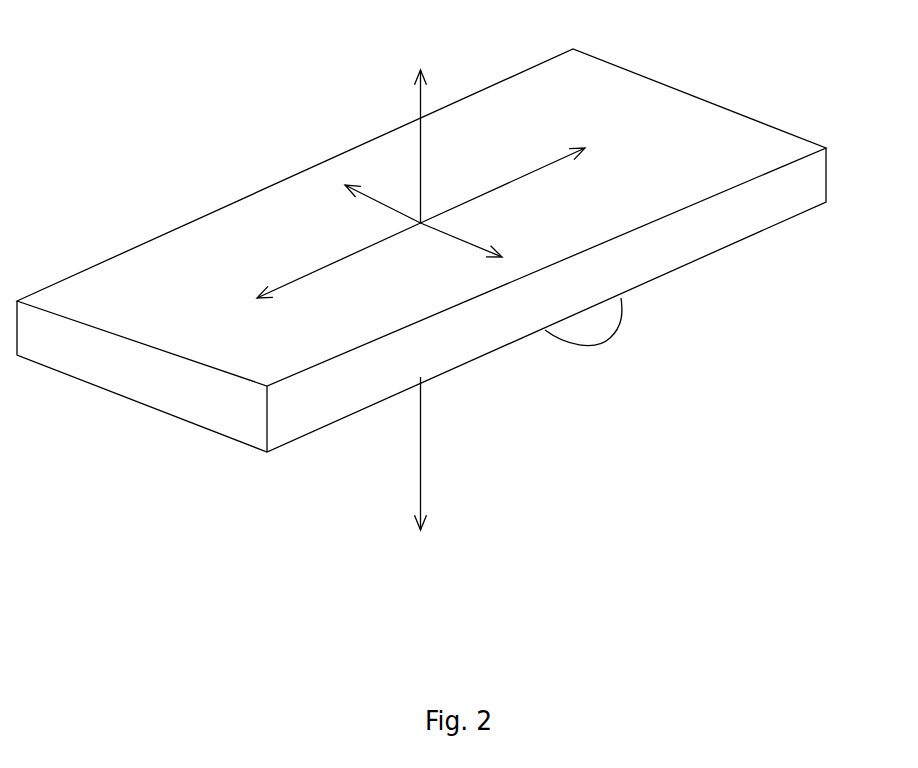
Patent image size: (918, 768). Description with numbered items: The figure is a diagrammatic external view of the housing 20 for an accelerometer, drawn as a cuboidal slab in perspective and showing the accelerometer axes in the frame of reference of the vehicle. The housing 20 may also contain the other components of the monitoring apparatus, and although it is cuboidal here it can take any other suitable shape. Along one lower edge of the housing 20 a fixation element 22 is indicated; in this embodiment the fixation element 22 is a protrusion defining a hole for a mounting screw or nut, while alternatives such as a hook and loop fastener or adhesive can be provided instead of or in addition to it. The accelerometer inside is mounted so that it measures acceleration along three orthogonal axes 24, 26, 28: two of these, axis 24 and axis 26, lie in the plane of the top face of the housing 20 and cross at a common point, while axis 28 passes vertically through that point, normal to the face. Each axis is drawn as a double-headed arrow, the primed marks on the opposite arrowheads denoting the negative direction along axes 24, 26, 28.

The housing 20 is at (221, 206).
The fixation element 22 is at (568, 342).
The axis 24 is at (492, 187).
The axis 26 is at (376, 203).
The axis 28 is at (418, 102).